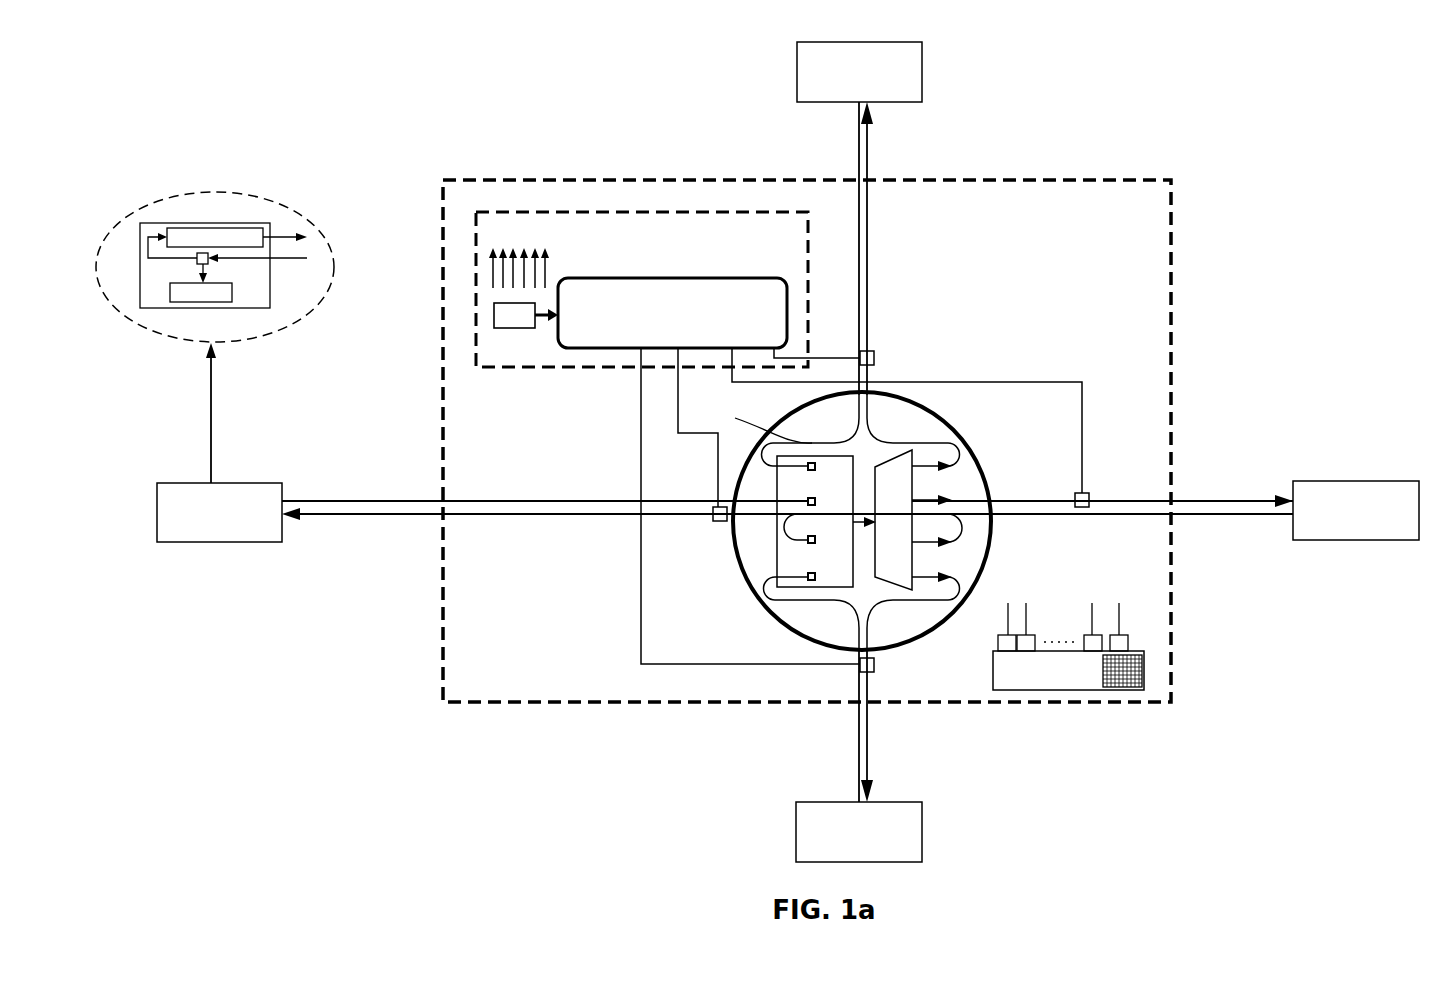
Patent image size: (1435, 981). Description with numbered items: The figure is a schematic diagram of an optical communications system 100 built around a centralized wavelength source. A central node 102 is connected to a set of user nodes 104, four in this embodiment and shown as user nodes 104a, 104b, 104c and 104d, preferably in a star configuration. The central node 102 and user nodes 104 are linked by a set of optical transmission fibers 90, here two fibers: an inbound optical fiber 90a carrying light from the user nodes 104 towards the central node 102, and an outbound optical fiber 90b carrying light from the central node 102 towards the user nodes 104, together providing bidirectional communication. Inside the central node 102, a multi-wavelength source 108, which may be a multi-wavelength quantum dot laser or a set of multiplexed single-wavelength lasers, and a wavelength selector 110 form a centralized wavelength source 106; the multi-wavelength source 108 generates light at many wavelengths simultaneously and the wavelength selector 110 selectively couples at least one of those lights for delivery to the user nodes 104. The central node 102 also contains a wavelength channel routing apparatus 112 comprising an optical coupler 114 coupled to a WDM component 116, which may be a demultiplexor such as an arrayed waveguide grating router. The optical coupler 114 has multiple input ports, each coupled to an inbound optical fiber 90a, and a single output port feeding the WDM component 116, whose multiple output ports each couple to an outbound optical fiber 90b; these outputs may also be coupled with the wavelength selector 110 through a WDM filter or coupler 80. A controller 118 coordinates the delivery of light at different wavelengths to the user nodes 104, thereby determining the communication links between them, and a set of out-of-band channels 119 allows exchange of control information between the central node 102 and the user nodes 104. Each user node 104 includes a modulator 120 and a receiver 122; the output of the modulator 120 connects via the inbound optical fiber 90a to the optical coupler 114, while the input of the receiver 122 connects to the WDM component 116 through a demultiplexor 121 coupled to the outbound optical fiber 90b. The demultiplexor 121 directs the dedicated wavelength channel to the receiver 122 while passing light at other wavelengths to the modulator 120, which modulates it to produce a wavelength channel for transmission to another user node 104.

The system 100 is at (1140, 93).
The central node 102 is at (1160, 247).
The user nodes 104 is at (780, 73).
The user node 104a is at (157, 498).
The user node 104b is at (922, 63).
The user node 104c is at (1347, 482).
The user node 104d is at (922, 840).
The centralized wavelength source 106 is at (758, 232).
The multi-wavelength source 108 is at (493, 314).
The wavelength selector 110 is at (776, 310).
The wavelength channel routing apparatus 112 is at (750, 572).
The optical coupler 114 is at (833, 580).
The WDM component 116 is at (916, 484).
The controller 118 is at (1145, 668).
The out-of-band channels 119 is at (1004, 618).
The modulator 120 is at (213, 228).
The demultiplexor 121 is at (197, 264).
The receiver 122 is at (220, 302).
The coupler 80 is at (875, 358).
The optical transmission fibers 90 is at (845, 145).
The inbound optical fiber 90a is at (857, 262).
The outbound optical fiber 90b is at (868, 268).